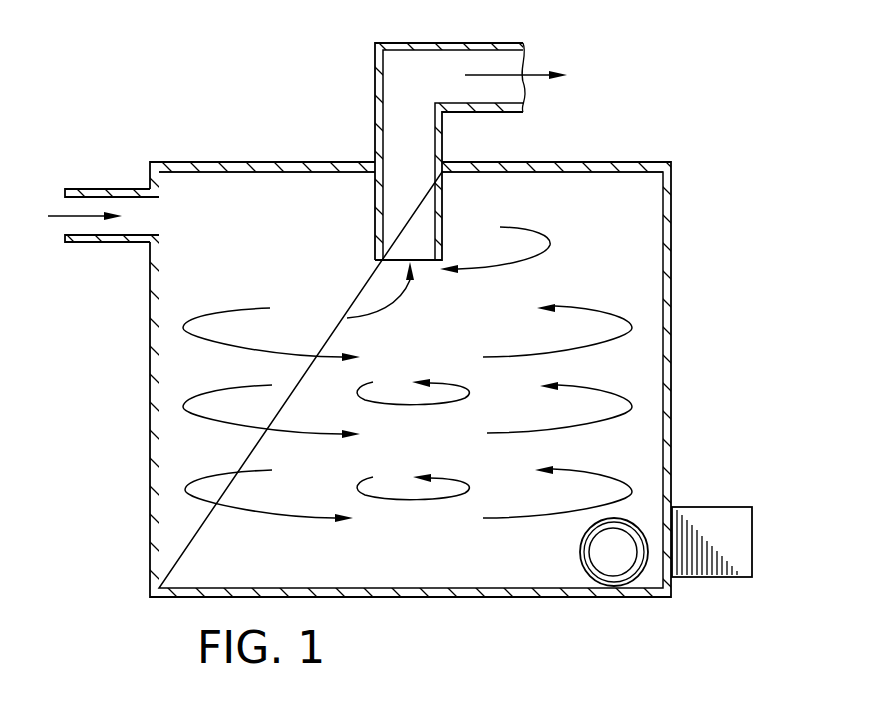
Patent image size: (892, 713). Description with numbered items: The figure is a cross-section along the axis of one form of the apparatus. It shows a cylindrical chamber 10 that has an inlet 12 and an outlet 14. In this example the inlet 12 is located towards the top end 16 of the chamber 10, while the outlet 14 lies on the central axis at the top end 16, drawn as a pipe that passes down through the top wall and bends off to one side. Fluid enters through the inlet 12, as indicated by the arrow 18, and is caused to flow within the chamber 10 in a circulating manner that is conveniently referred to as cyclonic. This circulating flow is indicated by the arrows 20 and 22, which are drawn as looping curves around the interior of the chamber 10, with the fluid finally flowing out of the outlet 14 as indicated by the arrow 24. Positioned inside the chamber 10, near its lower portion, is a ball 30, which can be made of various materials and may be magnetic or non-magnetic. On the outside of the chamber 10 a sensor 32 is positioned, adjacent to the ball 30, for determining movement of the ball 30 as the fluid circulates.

The cylindrical chamber 10 is at (396, 347).
The inlet 12 is at (98, 189).
The outlet 14 is at (403, 43).
The top end 16 is at (295, 162).
The arrow 18 is at (87, 214).
The arrows 20 is at (603, 313).
The arrows 22 is at (443, 383).
The arrow 24 is at (526, 46).
The ball 30 is at (603, 550).
The sensor 32 is at (736, 568).